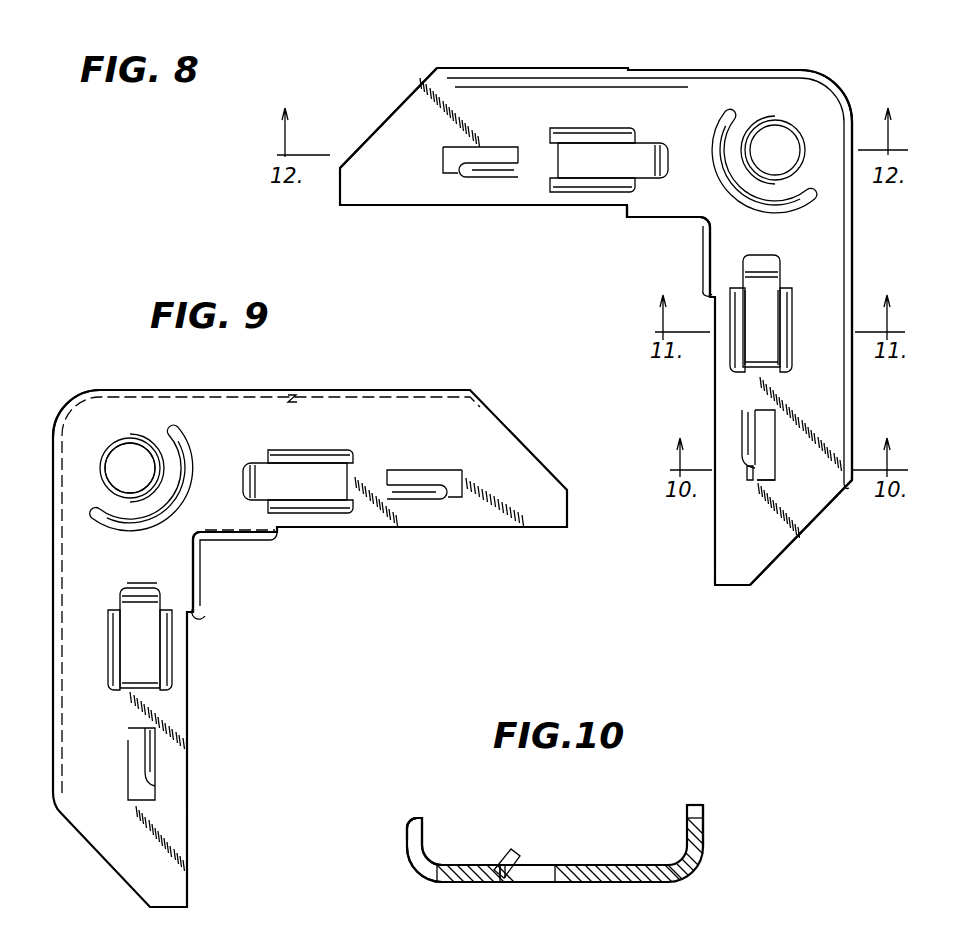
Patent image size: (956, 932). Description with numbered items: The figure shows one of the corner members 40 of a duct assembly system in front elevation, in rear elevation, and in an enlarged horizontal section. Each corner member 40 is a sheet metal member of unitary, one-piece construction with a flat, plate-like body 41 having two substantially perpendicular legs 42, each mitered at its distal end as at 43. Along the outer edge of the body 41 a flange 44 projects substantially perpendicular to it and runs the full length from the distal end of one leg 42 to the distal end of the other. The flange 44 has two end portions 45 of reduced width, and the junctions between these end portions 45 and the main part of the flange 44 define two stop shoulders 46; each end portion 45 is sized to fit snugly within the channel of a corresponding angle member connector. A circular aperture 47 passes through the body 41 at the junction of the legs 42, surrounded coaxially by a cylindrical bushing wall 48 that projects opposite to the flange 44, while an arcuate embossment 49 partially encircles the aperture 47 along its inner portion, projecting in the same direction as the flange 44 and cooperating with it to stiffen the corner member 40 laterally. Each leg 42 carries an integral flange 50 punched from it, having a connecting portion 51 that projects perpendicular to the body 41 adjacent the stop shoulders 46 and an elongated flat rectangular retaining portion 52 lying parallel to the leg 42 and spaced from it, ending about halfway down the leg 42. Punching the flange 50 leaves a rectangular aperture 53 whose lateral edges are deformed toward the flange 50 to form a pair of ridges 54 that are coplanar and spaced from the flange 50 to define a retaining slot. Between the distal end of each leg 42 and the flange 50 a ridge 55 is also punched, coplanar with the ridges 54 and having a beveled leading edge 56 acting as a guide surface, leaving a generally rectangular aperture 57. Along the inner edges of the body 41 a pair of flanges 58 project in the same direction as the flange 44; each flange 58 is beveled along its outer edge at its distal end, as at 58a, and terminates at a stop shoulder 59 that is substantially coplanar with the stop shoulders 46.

In FIG. 8, the corner member 40 is at (758, 56).
In FIG. 9, the corner member 40 is at (342, 368).
In FIG. 8, the body 41 is at (676, 90).
In FIG. 9, the body 41 is at (232, 420).
In FIG. 8, the legs 42 is at (350, 183).
In FIG. 9, the legs 42 is at (485, 515).
In FIG. 10, the legs 42 is at (620, 868).
In FIG. 8, the mitered distal end 43 is at (390, 115).
In FIG. 8, the flange 44 is at (775, 70).
In FIG. 9, the flange 44 is at (74, 481).
In FIG. 10, the flange 44 is at (703, 806).
In FIG. 8, the end portions 45 is at (514, 70).
In FIG. 10, the end portions 45 is at (705, 838).
In FIG. 8, the stop shoulders 46 is at (628, 70).
In FIG. 9, the stop shoulders 46 is at (292, 390).
In FIG. 10, the stop shoulders 46 is at (704, 818).
In FIG. 8, the circular aperture 47 is at (780, 127).
In FIG. 9, the circular aperture 47 is at (130, 447).
In FIG. 9, the cylindrical bushing wall 48 is at (105, 460).
In FIG. 8, the arcuate embossment 49 is at (725, 160).
In FIG. 9, the arcuate embossment 49 is at (182, 472).
In FIG. 8, the flange 50 is at (594, 162).
In FIG. 9, the flange 50 is at (318, 482).
In FIG. 8, the connecting portion 51 is at (765, 258).
In FIG. 8, the retaining portion 52 is at (757, 312).
In FIG. 8, the rectangular aperture 53 is at (557, 148).
In FIG. 8, the ridges 54 is at (735, 290).
In FIG. 8, the ridge 55 is at (505, 158).
In FIG. 9, the ridge 55 is at (415, 485).
In FIG. 10, the ridge 55 is at (510, 850).
In FIG. 8, the beveled leading edge 56 is at (749, 480).
In FIG. 10, the beveled leading edge 56 is at (520, 857).
In FIG. 8, the rectangular apertures 57 is at (772, 479).
In FIG. 10, the rectangular apertures 57 is at (550, 870).
In FIG. 8, the flanges 58 is at (664, 220).
In FIG. 10, the flanges 58 is at (422, 818).
In FIG. 10, the beveled distal end 58a is at (408, 822).
In FIG. 8, the stop shoulders 59 is at (628, 212).
In FIG. 9, the stop shoulders 59 is at (207, 615).
In FIG. 10, the stop shoulders 59 is at (412, 840).